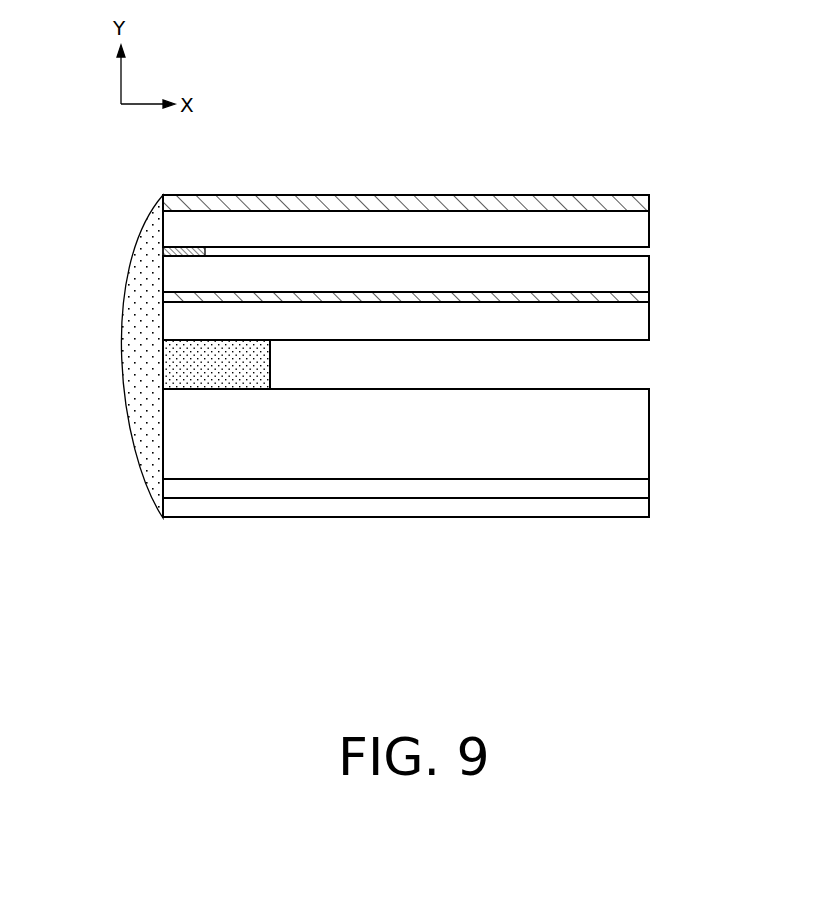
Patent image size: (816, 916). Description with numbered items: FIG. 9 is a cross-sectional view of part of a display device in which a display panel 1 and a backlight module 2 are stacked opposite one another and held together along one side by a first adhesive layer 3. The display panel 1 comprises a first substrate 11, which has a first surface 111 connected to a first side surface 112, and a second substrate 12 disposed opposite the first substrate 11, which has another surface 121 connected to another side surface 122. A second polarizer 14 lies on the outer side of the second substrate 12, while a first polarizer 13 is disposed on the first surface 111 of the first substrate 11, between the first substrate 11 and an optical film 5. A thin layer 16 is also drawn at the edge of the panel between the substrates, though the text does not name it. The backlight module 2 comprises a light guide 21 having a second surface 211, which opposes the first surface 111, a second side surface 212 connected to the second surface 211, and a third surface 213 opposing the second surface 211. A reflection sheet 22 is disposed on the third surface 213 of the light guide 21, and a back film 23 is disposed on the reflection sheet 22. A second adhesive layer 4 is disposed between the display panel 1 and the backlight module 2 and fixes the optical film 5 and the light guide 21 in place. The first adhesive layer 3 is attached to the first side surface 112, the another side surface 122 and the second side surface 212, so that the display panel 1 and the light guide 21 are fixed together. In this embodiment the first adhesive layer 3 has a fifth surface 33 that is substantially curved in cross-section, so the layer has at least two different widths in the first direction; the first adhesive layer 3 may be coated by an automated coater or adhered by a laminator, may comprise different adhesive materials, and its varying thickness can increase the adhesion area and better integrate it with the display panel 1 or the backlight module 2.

The display panel 1 is at (398, 224).
The second polarizer 14 is at (650, 205).
The second substrate 12 is at (640, 238).
The another side surface 122 is at (163, 235).
The another surface 121 is at (452, 210).
The light shielding layer 16 is at (163, 250).
The first substrate 11 is at (640, 268).
The first side surface 112 is at (163, 275).
The first surface 111 is at (163, 299).
The first polarizer 13 is at (429, 298).
The optical film 5 is at (640, 326).
The second adhesive layer 4 is at (272, 358).
The backlight module 2 is at (397, 445).
The light guide 21 is at (640, 437).
The second surface 211 is at (193, 389).
The second side surface 212 is at (163, 430).
The third surface 213 is at (195, 479).
The reflection sheet 22 is at (640, 488).
The back film 23 is at (429, 509).
The first adhesive layer 3 is at (157, 222).
The fifth surface 33 is at (120, 343).